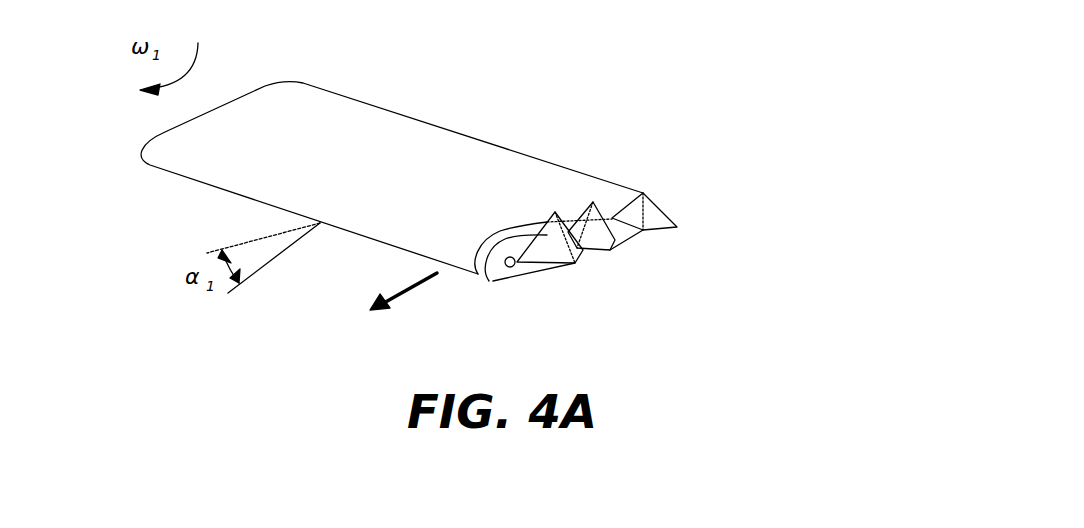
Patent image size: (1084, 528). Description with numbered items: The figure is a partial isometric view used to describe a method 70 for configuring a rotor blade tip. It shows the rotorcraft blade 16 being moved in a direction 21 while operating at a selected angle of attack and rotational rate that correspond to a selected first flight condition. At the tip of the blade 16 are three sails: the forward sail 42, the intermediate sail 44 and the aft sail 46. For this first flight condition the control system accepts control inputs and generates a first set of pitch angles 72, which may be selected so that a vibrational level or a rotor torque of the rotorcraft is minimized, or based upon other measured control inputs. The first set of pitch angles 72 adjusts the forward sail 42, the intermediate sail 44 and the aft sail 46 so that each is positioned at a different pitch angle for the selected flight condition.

The rotorcraft blade 16 is at (202, 170).
The direction 21 is at (404, 290).
The forward sail 42 is at (545, 247).
The intermediate sail 44 is at (592, 233).
The aft sail 46 is at (650, 212).
The method for configuring a rotor blade tip 70 is at (737, 102).
The first set of pitch angles 72 is at (865, 248).